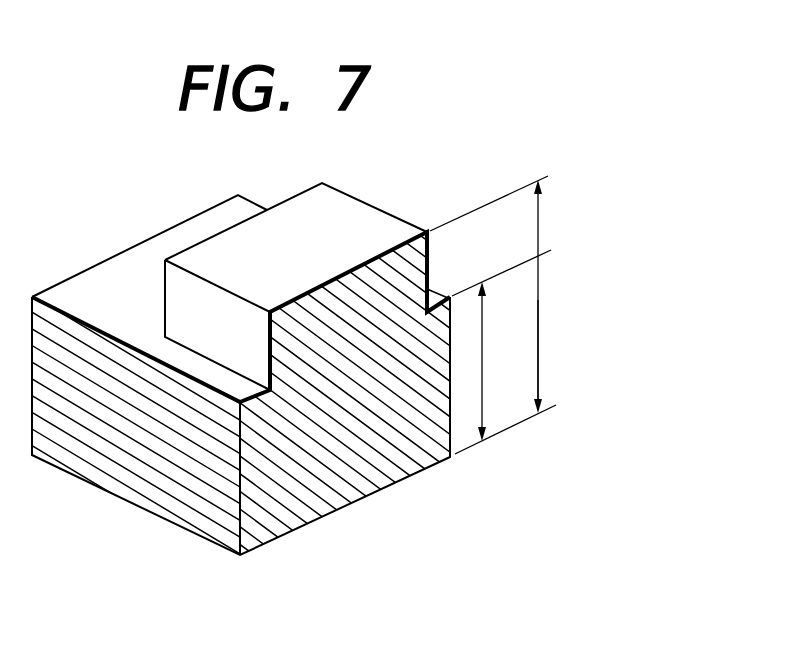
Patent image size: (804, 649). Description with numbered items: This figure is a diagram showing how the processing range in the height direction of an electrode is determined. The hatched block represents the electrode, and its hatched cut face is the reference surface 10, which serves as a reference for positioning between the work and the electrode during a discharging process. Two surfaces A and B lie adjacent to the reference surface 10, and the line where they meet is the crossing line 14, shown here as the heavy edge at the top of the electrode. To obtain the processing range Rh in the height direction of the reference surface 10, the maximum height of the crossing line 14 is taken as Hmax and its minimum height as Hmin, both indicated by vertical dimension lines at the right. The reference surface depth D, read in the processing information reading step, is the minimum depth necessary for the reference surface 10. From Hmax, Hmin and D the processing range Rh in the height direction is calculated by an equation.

The reference surface 10 is at (217, 532).
The crossing line 14 is at (177, 378).
The surface A is at (125, 277).
The surface B is at (352, 223).
The maximum height of the crossing line Hmax is at (547, 177).
The minimum height of the crossing line Hmin is at (551, 250).
The reference surface depth D is at (482, 348).
The processing range in the height direction Rh is at (538, 345).